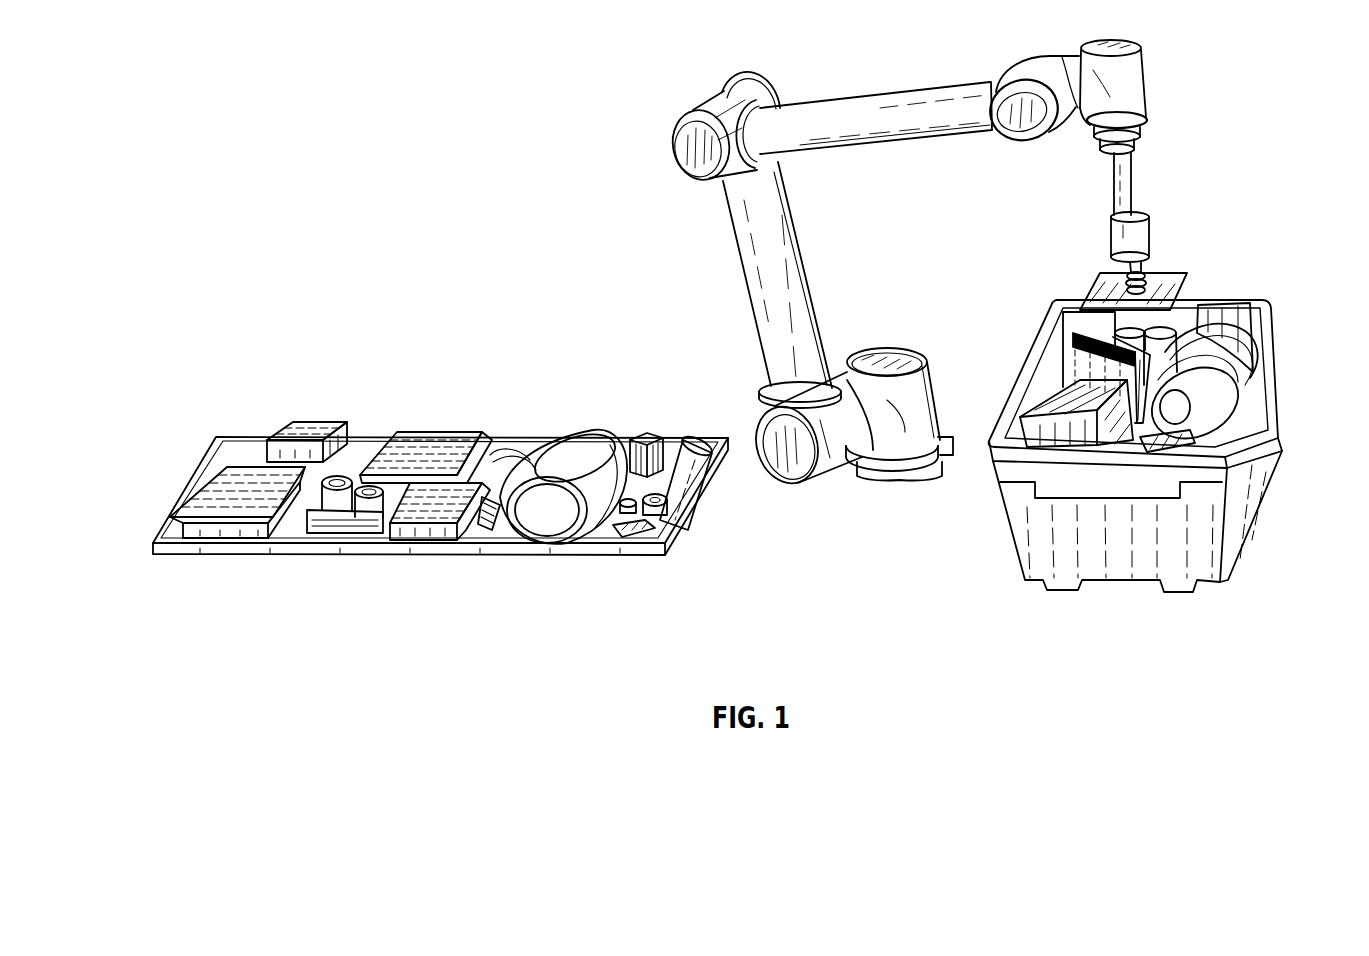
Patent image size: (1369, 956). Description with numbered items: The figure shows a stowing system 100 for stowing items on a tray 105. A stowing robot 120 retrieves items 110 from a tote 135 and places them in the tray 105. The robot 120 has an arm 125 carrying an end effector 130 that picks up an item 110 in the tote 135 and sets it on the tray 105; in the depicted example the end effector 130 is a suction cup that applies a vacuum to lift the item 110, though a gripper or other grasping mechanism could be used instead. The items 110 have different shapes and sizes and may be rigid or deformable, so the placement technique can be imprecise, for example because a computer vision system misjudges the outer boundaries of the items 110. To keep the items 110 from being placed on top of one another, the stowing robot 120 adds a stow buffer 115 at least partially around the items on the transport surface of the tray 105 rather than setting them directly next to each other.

The stowing system 100 is at (429, 244).
The tray 105 is at (155, 548).
The items 110 is at (230, 485).
The stow buffer 115 is at (600, 540).
The stowing robot 120 is at (748, 88).
The arm 125 is at (935, 85).
The end effector 130 is at (1155, 278).
The tote 135 is at (1250, 505).